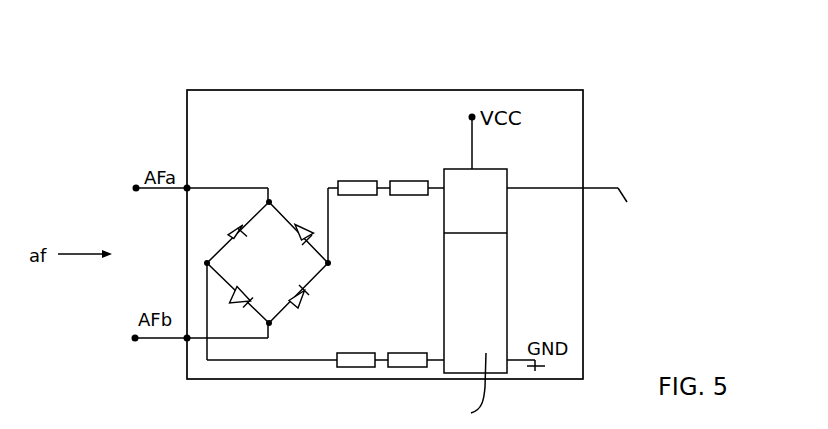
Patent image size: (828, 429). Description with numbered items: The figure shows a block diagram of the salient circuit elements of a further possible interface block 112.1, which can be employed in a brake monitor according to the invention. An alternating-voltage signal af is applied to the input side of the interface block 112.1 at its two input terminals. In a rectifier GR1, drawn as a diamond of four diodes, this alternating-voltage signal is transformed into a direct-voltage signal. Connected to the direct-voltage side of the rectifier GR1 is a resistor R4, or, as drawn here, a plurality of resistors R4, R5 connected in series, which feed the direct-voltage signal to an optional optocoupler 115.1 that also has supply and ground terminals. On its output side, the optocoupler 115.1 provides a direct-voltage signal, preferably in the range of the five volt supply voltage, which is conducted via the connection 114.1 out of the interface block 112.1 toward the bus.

The interface block 112.1 is at (233, 97).
The connection 114.1 is at (612, 187).
The optocoupler 115.1 is at (403, 297).
The rectifier GR1 is at (267, 262).
The resistor R4 is at (357, 262).
The resistor R5 is at (408, 262).